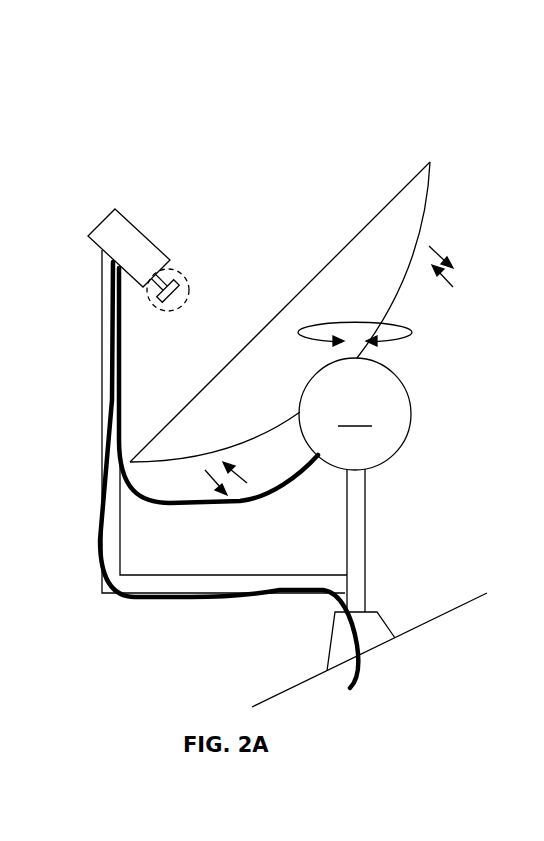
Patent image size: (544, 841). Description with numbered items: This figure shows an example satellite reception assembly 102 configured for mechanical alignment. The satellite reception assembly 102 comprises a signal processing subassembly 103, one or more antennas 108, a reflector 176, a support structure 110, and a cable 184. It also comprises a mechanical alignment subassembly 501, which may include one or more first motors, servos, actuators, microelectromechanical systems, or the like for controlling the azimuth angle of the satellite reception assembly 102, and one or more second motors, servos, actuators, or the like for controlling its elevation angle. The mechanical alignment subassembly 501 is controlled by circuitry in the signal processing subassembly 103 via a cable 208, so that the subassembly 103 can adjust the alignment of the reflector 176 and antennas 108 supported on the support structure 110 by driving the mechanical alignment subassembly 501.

The satellite reception assembly 102 is at (280, 118).
The signal processing subassembly 103 is at (143, 210).
The antenna 108 is at (162, 313).
The support structure 110 is at (162, 573).
The reflector 176 is at (428, 194).
The cable 184 is at (168, 603).
The cable 208 is at (274, 490).
The mechanical alignment subassembly 501 is at (355, 485).